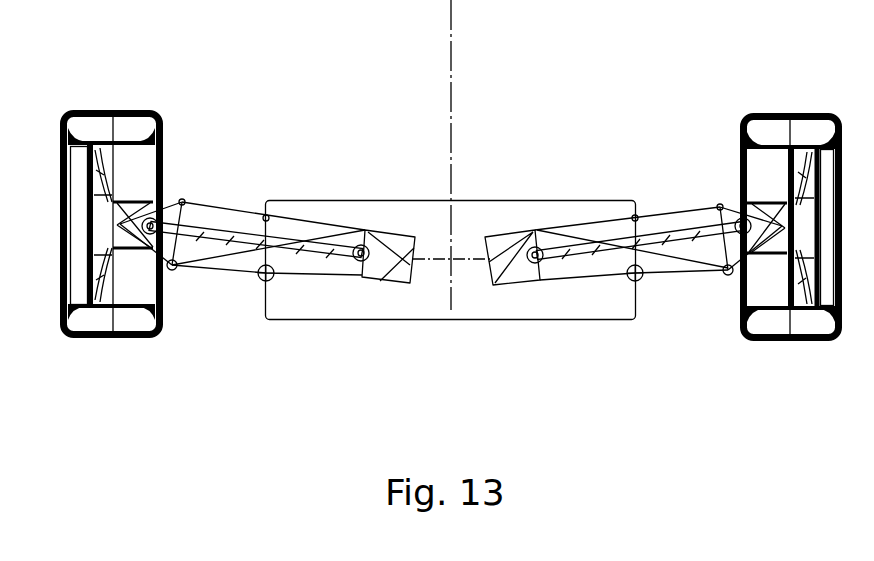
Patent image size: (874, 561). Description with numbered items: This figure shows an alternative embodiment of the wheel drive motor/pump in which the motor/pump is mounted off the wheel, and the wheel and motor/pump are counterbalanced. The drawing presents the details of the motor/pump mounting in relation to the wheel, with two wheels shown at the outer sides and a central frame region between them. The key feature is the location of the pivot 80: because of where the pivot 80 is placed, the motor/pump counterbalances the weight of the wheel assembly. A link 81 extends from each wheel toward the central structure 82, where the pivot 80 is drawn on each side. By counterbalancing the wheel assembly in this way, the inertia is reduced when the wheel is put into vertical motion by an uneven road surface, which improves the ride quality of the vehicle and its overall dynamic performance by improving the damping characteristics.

The pivot 80 is at (266, 281).
The tie rod 81 is at (209, 246).
The frame 82 is at (458, 325).